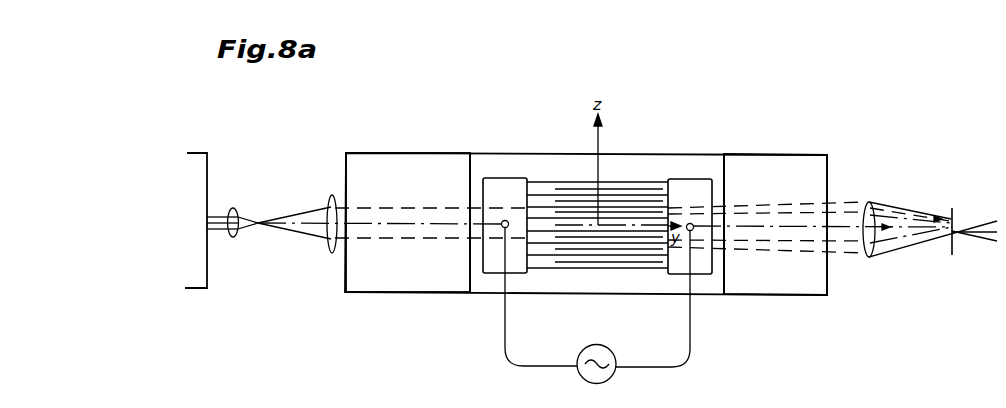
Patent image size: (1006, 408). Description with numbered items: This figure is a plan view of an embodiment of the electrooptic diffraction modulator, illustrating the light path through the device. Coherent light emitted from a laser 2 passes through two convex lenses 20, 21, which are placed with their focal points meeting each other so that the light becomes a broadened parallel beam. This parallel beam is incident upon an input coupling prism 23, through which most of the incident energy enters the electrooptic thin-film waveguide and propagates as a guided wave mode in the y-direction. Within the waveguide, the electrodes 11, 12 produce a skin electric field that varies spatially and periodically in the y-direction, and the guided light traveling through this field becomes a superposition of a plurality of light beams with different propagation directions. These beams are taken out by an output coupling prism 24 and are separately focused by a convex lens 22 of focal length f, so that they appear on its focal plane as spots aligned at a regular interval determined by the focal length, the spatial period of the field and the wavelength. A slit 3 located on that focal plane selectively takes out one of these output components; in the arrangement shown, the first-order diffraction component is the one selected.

The laser 2 is at (198, 282).
The slit 3 is at (950, 248).
The electrode 11 is at (493, 266).
The electrode 12 is at (681, 268).
The convex lens 20 is at (233, 208).
The convex lens 21 is at (328, 200).
The convex lens 22 is at (867, 256).
The input coupling prism 23 is at (397, 285).
The output coupling prism 24 is at (779, 290).